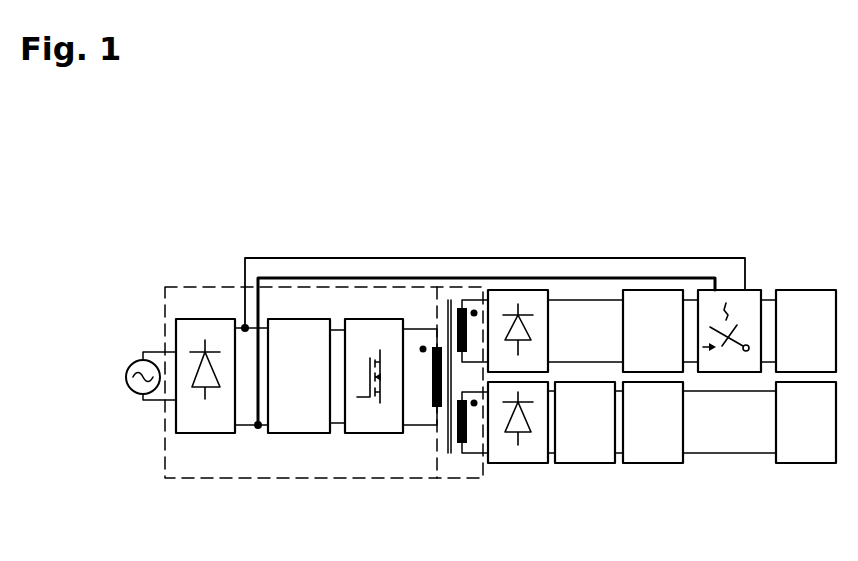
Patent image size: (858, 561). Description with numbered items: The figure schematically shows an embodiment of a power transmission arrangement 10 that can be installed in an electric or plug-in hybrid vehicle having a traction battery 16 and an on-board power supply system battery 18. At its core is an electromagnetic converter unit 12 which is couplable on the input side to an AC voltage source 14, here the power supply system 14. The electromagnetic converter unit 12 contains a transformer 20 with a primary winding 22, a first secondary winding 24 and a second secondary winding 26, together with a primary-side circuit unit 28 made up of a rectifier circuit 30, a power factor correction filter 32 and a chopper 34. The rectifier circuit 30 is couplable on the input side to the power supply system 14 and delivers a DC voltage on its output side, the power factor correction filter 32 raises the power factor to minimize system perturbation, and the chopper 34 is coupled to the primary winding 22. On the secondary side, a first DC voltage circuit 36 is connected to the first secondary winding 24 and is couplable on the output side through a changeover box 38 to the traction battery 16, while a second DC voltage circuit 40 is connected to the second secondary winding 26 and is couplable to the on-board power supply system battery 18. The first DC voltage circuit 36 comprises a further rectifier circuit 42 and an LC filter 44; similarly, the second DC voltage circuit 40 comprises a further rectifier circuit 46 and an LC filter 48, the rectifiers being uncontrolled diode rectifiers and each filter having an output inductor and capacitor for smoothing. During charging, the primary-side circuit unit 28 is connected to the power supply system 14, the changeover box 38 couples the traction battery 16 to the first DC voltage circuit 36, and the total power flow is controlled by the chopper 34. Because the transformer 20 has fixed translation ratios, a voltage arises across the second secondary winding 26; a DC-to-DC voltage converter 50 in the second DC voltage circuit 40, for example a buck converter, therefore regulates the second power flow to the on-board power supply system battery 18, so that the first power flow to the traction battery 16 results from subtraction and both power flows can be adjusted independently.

The power transmission arrangement 10 is at (573, 176).
The electromagnetic converter unit 12 is at (203, 480).
The AC voltage source 14 is at (139, 359).
The traction battery 16 is at (805, 297).
The on-board power supply system battery 18 is at (805, 463).
The transformer 20 is at (424, 246).
The primary winding 22 is at (432, 392).
The first secondary winding 24 is at (447, 302).
The second secondary winding 26 is at (450, 443).
The primary-side circuit unit 28 is at (300, 246).
The rectifier circuit 30 is at (200, 325).
The power factor correction filter 32 is at (305, 433).
The chopper 34 is at (360, 433).
The first DC voltage circuit 36 is at (606, 245).
The changeover box 38 is at (729, 297).
The second DC voltage circuit 40 is at (610, 480).
The further rectifier circuit 42 is at (517, 290).
The LC filter 44 is at (652, 297).
The further rectifier circuit 46 is at (520, 463).
The LC filter 48 is at (652, 463).
The DC-to-DC voltage converter 50 is at (585, 463).